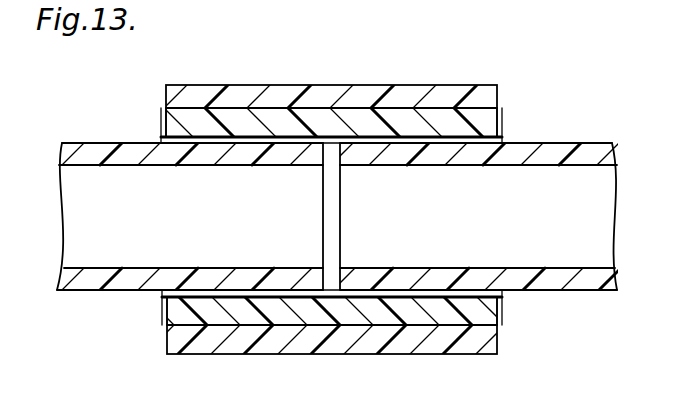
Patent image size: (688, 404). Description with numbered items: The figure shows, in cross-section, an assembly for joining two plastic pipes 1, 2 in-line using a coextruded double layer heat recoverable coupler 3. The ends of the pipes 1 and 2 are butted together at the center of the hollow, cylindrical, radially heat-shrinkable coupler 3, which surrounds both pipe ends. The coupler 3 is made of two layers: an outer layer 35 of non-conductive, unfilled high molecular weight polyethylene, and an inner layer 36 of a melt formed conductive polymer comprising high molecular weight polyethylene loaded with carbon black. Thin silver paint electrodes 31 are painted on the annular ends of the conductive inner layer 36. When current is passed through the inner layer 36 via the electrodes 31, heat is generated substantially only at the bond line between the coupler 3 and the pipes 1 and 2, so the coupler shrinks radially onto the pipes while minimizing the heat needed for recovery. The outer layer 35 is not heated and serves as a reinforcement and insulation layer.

The plastic pipe 1 is at (90, 281).
The plastic pipe 2 is at (540, 277).
The heat recoverable coupler 3 is at (336, 80).
The silver paint electrodes 31 is at (502, 127).
The outer layer 35 is at (485, 92).
The inner layer 36 is at (483, 123).